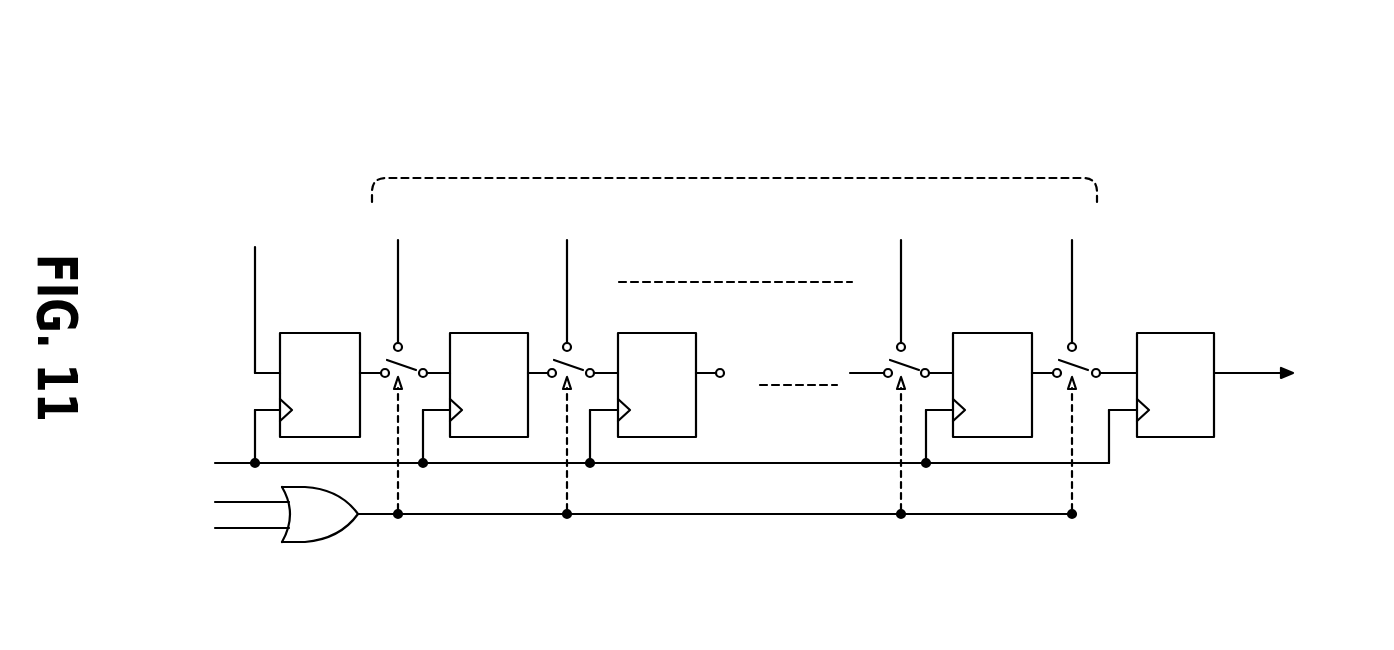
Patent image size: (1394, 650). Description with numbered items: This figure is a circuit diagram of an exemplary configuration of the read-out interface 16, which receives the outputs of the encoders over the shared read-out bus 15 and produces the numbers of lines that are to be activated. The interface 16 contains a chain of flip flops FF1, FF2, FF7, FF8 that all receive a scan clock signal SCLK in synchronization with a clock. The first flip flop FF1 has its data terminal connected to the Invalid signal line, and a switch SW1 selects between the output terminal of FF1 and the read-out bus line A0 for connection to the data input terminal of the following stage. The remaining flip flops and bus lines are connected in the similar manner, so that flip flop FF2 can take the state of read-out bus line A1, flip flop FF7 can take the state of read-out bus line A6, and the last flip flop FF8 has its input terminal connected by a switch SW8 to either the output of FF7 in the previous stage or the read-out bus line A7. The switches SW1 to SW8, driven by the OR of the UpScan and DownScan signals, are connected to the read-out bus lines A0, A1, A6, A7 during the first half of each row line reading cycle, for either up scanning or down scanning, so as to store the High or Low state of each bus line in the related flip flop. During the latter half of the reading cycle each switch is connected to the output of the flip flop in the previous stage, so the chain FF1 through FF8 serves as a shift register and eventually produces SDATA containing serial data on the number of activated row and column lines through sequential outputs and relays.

The read-out bus 15 is at (734, 248).
The read-out interface 16 is at (1113, 132).
The flip flop FF1 is at (320, 333).
The flip flop FF2 is at (492, 333).
The flip flop FF7 is at (995, 333).
The flip flop FF8 is at (1178, 333).
The switch SW1 is at (401, 368).
The switch SW8 is at (1076, 366).
The read-out bus line A0 is at (398, 281).
The read-out bus line A1 is at (567, 281).
The read-out bus line A6 is at (901, 281).
The read-out bus line A7 is at (1072, 281).